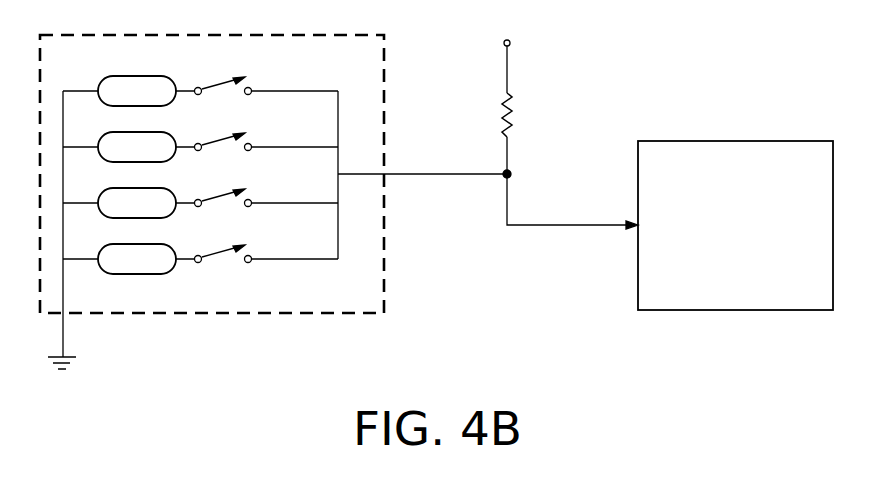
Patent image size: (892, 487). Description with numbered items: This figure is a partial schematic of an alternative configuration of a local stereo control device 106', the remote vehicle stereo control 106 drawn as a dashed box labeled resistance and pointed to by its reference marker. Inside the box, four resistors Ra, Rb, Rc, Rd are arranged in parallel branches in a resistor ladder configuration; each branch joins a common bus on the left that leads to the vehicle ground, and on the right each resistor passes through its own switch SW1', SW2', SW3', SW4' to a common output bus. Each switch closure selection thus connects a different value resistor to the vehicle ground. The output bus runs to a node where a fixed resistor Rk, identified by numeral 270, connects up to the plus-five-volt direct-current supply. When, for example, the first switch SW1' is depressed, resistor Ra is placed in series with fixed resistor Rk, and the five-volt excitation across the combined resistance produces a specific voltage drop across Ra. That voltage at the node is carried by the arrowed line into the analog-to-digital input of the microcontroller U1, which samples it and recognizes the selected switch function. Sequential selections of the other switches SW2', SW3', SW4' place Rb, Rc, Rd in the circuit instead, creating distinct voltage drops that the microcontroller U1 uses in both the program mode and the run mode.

The local stereo control device 106' is at (212, 185).
The resistance network (selectable resistor bank) 106 is at (212, 185).
The pull-up resistor Rk 270 is at (542, 77).
The fixed resistor Rk is at (522, 99).
The resistor Ra is at (128, 91).
The resistor b Rb is at (128, 147).
The resistor c Rc is at (128, 203).
The resistor d Rd is at (128, 259).
The switch SW1' is at (267, 77).
The switch SW2' is at (267, 133).
The switch SW3' is at (267, 189).
The switch 4 SW4' is at (267, 245).
The microcontroller U1 is at (735, 225).